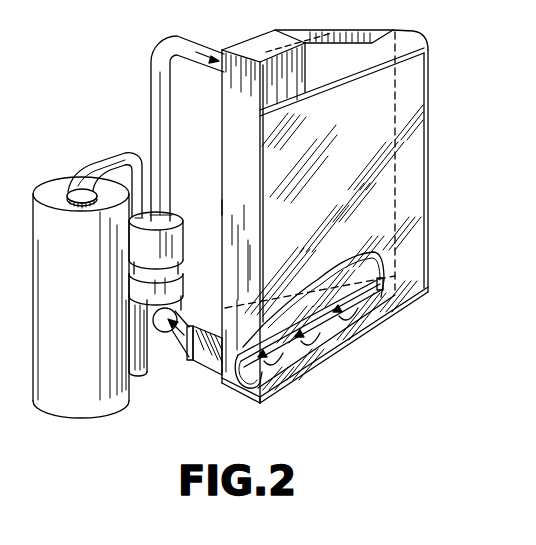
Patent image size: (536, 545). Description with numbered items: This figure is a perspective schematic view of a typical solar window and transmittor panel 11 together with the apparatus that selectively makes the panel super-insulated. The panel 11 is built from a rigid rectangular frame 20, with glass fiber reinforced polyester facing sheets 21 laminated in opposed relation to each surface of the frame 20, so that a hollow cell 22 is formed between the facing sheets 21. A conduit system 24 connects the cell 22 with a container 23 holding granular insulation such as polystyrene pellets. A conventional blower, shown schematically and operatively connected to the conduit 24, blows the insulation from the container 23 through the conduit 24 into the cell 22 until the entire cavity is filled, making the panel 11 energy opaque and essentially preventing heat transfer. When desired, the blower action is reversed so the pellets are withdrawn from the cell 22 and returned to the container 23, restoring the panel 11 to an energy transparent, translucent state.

The solar window and transmittor panel 11 is at (240, 397).
The rigid rectangular frame 20 is at (230, 148).
The glass fiber reinforced polyester facing sheets 21 is at (243, 207).
The hollow cell 22 is at (232, 380).
The container 23 is at (87, 301).
The conduit system 24 is at (152, 125).